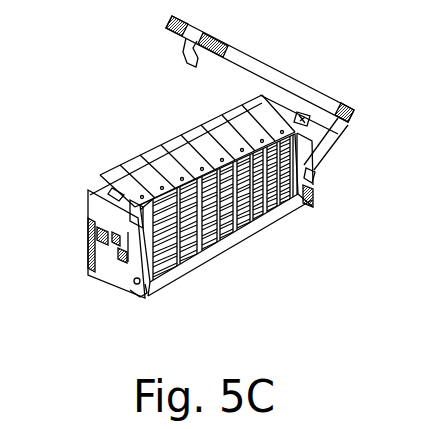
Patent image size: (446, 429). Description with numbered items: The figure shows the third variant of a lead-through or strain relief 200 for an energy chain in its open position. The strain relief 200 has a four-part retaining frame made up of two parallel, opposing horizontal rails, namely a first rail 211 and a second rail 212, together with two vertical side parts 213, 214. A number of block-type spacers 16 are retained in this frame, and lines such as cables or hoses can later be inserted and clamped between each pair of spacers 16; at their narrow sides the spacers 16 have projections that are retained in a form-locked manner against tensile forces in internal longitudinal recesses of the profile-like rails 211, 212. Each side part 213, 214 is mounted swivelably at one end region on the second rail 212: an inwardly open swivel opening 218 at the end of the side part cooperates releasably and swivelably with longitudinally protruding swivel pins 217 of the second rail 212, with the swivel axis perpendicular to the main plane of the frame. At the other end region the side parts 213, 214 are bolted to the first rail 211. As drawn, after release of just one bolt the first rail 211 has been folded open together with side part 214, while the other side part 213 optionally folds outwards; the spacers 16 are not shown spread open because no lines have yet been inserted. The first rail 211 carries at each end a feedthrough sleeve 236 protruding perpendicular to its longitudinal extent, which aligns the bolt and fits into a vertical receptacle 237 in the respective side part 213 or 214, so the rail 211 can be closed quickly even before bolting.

The strain relief 200 is at (93, 71).
The spacers 16 is at (172, 168).
The first rail 211 is at (290, 82).
The second rail 212 is at (264, 225).
The side part 213 is at (97, 210).
The side part 214 is at (338, 138).
The swivel pins 217 is at (95, 252).
The swivel opening 218 is at (310, 170).
The feedthrough sleeve 236 is at (183, 57).
The vertical receptacle 237 is at (119, 190).